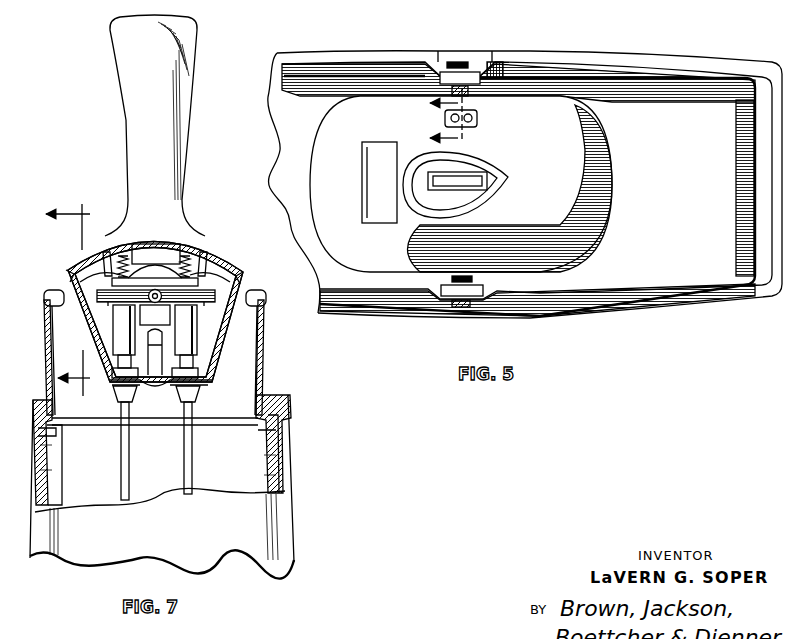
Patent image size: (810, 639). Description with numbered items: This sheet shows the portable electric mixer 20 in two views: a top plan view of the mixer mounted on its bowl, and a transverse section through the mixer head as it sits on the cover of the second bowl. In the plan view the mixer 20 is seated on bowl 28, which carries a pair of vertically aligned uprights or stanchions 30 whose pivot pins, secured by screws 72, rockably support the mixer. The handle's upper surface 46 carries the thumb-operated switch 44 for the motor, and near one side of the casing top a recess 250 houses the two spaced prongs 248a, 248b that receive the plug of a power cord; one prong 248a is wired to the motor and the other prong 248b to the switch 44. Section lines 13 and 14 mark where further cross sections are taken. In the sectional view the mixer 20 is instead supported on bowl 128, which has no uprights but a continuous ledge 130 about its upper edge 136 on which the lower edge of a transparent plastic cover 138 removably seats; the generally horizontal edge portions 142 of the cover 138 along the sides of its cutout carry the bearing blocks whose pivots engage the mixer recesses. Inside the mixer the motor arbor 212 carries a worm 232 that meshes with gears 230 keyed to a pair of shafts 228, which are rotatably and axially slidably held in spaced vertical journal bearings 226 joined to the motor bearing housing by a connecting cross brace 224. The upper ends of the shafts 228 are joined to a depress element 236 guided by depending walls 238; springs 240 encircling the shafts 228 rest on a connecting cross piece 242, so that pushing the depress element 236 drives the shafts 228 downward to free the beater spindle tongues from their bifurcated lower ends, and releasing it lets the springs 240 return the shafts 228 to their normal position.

In FIG. 5, the section line 13- 13 is at (432, 119).
In FIG. 7, the section line 14- 14 is at (68, 300).
In FIG. 7, the portable electric mixer 20 is at (244, 264).
In FIG. 5, the bowl 28 is at (640, 62).
In FIG. 5, the uprights or stanchions 30 is at (447, 50).
In FIG. 5, the switch 44 is at (500, 170).
In FIG. 5, the upper surface of the handle 46 is at (427, 205).
In FIG. 5, the screws 72 is at (468, 53).
In FIG. 7, the bowl 128 is at (290, 452).
In FIG. 7, the continuous ledge 130 is at (254, 420).
In FIG. 7, the upper edge 136 is at (268, 402).
In FIG. 7, the cover 138 is at (262, 345).
In FIG. 7, the portions of cover 142 is at (58, 297).
In FIG. 7, the arbor 212 is at (155, 290).
In FIG. 7, the connecting cross brace 224 is at (206, 378).
In FIG. 7, the journal bearings 226 is at (114, 331).
In FIG. 7, the shafts 228 is at (133, 392).
In FIG. 7, the gears 230 is at (73, 277).
In FIG. 7, the worm 232 is at (178, 262).
In FIG. 5, the depress element 236 is at (368, 191).
In FIG. 7, the depending walls 238 is at (100, 262).
In FIG. 7, the springs 240 is at (207, 263).
In FIG. 7, the connecting cross piece 242 is at (240, 276).
In FIG. 5, the prong 248a is at (477, 118).
In FIG. 5, the prong 248b is at (445, 118).
In FIG. 5, the recess 250 is at (470, 125).